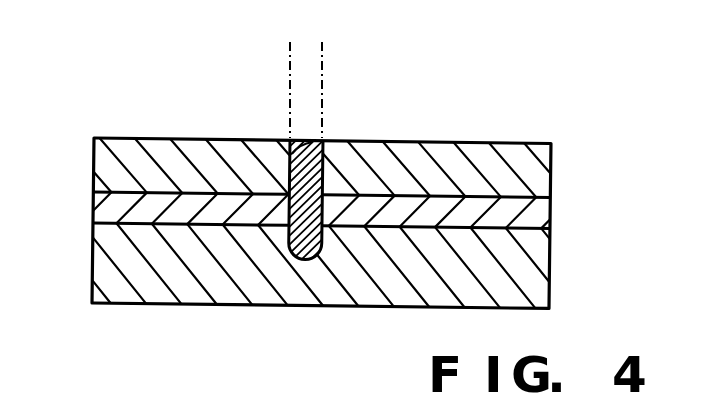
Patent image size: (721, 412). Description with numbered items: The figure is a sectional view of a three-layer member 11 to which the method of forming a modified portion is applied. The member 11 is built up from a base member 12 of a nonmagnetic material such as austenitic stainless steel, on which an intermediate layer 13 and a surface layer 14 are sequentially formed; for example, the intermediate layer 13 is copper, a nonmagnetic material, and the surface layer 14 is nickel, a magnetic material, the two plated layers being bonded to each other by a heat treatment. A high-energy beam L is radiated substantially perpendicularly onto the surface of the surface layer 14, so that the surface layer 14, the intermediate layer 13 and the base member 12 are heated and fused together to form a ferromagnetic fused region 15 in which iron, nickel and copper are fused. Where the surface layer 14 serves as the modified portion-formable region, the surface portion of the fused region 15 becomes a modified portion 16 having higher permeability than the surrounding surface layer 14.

The member 11 is at (80, 190).
The base member 12 is at (539, 263).
The intermediate layer 13 is at (536, 214).
The surface layer 14 is at (500, 143).
The fused region 15 is at (336, 146).
The modified portion 16 is at (305, 140).
The high-energy beam L is at (325, 82).